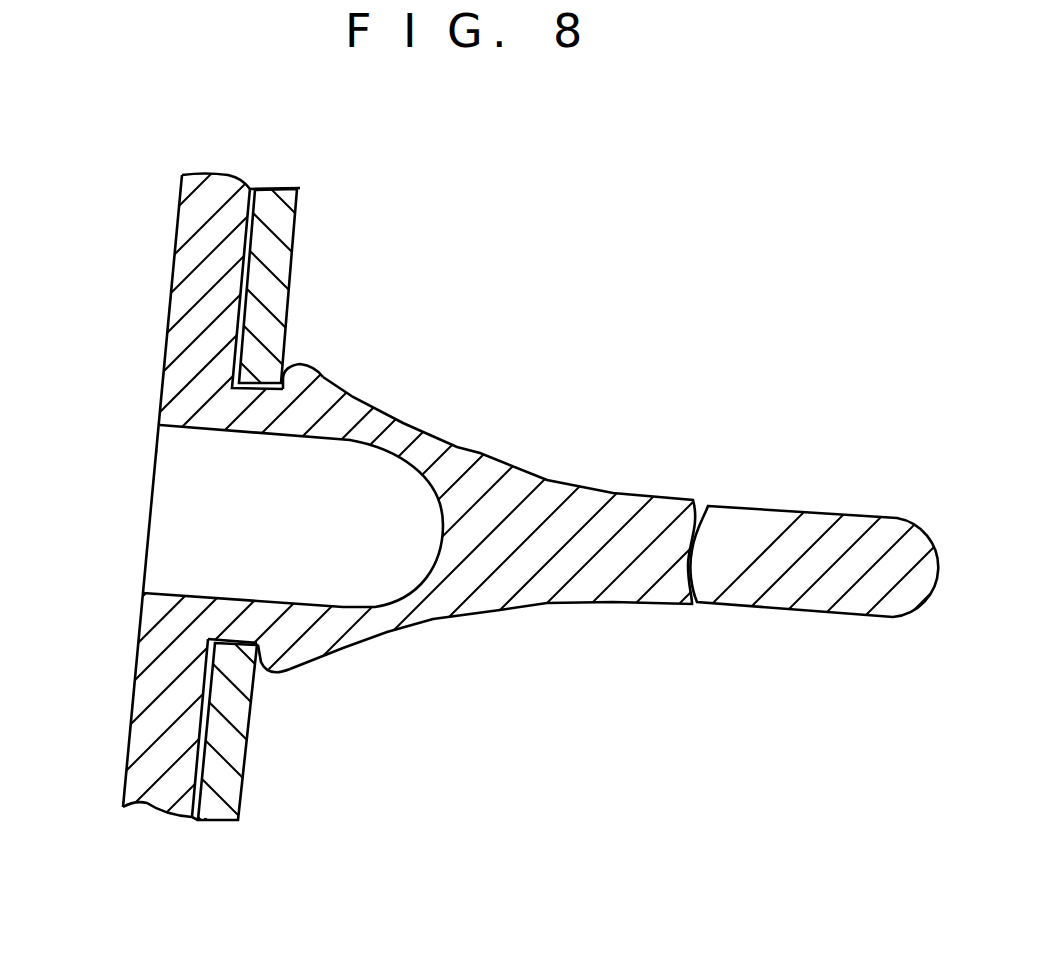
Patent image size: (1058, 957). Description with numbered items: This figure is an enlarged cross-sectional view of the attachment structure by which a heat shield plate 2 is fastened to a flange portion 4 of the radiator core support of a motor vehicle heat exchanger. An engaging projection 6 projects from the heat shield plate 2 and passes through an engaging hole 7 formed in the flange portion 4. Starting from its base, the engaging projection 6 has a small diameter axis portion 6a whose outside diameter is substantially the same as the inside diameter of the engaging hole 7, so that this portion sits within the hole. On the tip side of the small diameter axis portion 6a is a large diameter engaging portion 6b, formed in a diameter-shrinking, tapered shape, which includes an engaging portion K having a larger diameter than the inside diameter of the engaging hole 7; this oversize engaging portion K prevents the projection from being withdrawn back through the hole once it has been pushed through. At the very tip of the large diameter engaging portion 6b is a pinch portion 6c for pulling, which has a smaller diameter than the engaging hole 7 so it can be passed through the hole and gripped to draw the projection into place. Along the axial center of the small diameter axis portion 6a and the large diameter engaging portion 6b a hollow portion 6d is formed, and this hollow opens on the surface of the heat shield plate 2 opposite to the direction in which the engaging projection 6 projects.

The heat shield plate 2 is at (160, 250).
The flange portion 4 is at (272, 226).
The engaging projection 6 is at (613, 462).
The small diameter axis portion 6a is at (248, 400).
The large diameter engaging portion 6b is at (383, 618).
The pinch portion 6c is at (847, 533).
The hollow portion 6d is at (328, 515).
The engaging hole 7 is at (243, 643).
The engaging portion K is at (283, 675).